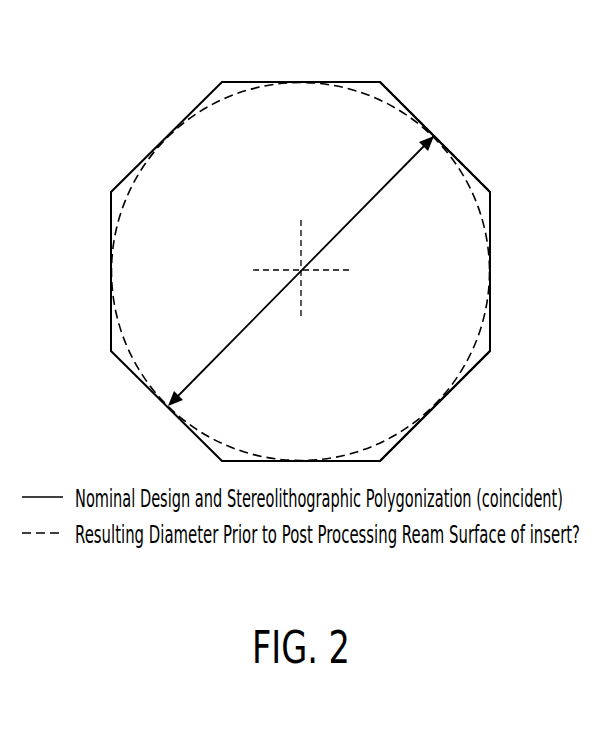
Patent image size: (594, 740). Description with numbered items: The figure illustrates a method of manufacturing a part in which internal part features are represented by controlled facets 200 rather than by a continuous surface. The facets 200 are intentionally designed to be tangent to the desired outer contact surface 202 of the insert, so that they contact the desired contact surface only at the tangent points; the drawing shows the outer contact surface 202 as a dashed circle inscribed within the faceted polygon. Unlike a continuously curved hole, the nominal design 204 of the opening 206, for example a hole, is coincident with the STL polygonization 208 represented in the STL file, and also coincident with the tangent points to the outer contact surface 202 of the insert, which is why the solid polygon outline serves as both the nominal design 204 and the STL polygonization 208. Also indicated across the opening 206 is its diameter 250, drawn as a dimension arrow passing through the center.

The facets 200 is at (476, 178).
The outer contact surface 202 is at (481, 211).
The nominal design 204 is at (398, 101).
The opening 206 is at (437, 375).
The STL polygonization 208 is at (490, 248).
The diameter 250 is at (343, 230).